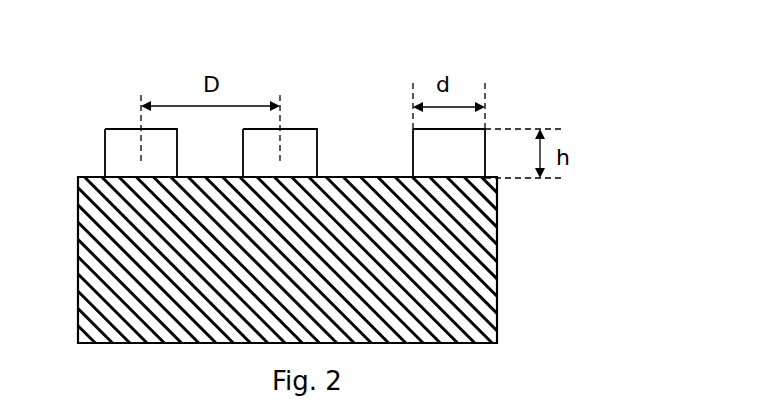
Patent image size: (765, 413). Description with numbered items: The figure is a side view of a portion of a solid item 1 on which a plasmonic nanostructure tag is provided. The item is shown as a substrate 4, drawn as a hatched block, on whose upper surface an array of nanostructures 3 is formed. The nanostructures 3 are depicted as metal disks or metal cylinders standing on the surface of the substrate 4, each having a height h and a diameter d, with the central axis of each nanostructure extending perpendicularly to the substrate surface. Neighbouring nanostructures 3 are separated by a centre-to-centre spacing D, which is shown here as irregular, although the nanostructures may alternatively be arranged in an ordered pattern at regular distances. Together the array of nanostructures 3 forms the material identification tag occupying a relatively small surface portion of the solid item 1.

The solid item 1 is at (540, 78).
The nanostructures 3 is at (120, 137).
The substrate 4 is at (489, 276).